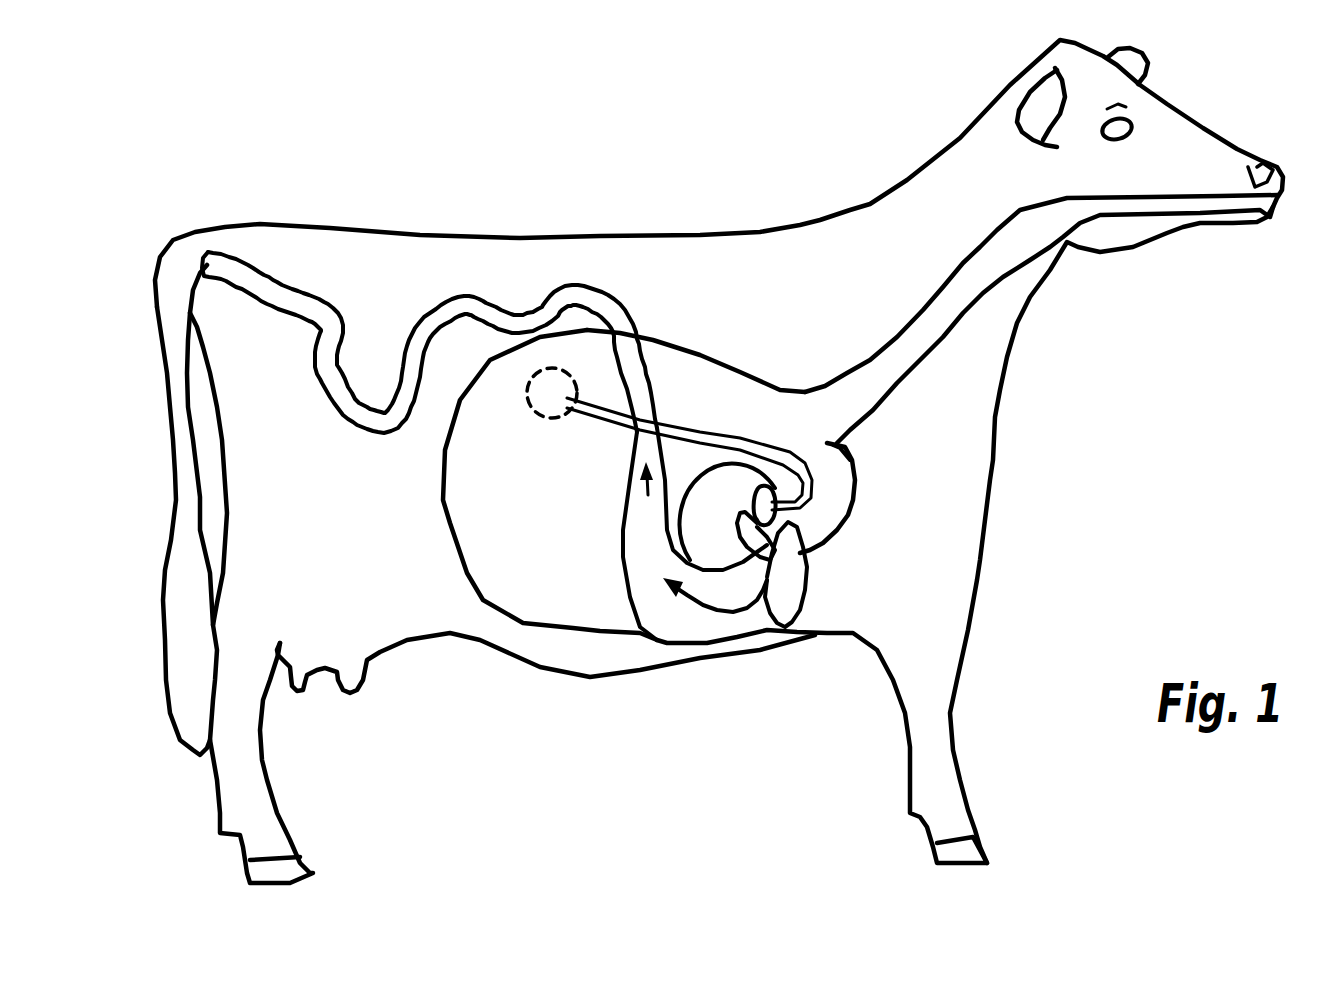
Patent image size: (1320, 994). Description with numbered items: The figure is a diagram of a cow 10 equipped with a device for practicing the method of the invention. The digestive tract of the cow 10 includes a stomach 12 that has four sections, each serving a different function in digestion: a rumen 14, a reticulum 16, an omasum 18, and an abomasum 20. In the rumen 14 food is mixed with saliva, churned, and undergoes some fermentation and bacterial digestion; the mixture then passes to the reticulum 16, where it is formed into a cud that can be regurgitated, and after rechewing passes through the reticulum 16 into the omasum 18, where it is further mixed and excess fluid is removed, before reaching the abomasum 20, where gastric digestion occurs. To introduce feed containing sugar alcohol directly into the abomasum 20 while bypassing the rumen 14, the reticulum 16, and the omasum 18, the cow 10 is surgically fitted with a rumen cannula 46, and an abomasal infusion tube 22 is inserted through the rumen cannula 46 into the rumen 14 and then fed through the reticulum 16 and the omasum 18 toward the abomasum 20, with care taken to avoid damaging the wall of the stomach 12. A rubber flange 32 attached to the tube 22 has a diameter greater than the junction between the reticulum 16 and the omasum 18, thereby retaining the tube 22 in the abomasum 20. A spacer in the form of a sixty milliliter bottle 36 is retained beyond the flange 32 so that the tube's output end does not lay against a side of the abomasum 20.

The cow 10 is at (719, 461).
The stomach 12 is at (503, 342).
The rumen 14 is at (536, 517).
The reticulum 16 is at (925, 502).
The omasum 18 is at (756, 624).
The abomasum 20 is at (689, 598).
The abomasal infusion tube 22 is at (947, 437).
The rubber flange 32 is at (809, 454).
The bottle 36 is at (884, 572).
The rumen cannula 46 is at (596, 339).